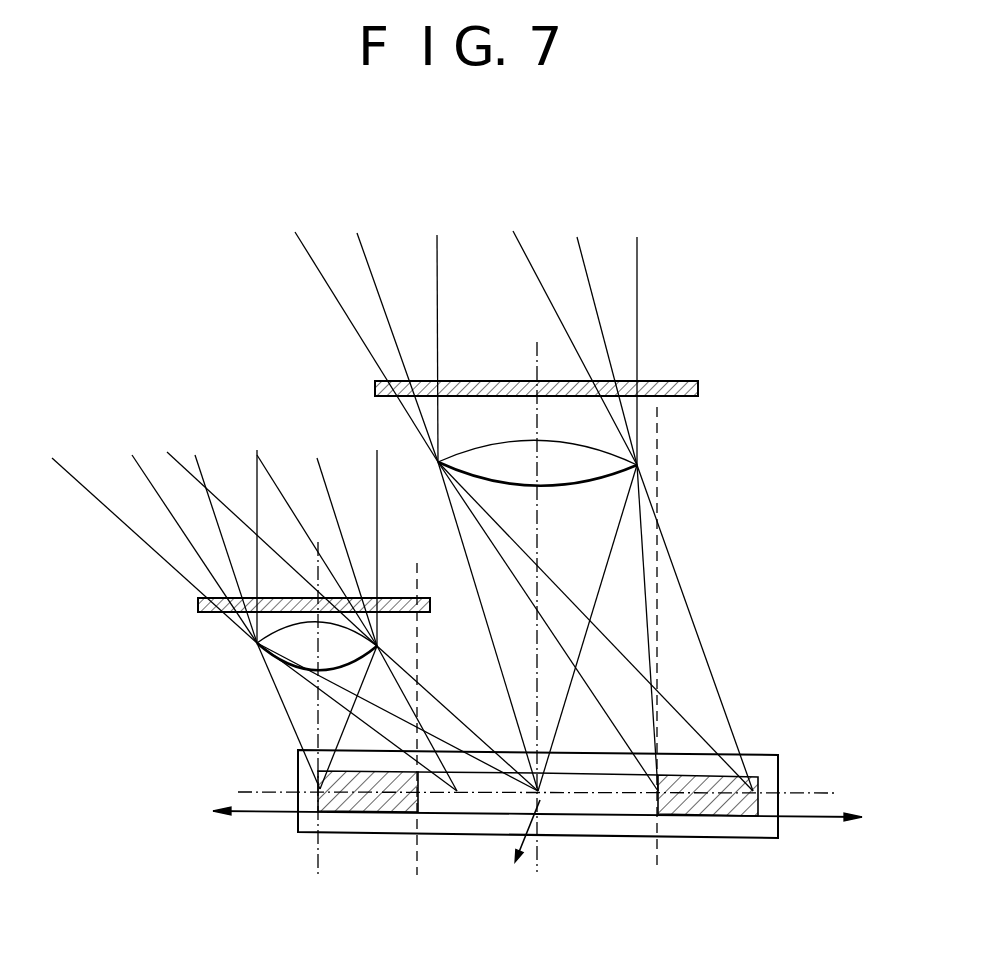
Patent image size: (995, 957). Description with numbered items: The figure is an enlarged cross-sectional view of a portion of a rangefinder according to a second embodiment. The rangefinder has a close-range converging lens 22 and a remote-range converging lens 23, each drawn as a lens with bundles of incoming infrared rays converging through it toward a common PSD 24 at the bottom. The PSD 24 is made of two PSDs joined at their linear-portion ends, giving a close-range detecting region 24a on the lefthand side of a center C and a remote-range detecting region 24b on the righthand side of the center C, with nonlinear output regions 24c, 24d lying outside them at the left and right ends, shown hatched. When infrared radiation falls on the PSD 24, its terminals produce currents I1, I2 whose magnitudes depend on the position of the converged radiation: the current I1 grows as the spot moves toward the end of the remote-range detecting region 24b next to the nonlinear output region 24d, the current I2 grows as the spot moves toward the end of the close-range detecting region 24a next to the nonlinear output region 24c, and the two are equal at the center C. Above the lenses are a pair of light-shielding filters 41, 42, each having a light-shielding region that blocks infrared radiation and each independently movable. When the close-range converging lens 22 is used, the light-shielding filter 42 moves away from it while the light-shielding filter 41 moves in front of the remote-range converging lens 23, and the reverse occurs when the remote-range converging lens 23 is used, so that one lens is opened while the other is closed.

The light-shielding filter 41 is at (684, 382).
The light-shielding filter 42 is at (398, 597).
The remote-range converging lens 23 is at (569, 470).
The close-range converging lens 22 is at (280, 645).
The PSD 24 is at (399, 845).
The close-range detecting region 24a is at (457, 802).
The remote-range detecting region 24b is at (612, 807).
The nonlinear output region 24c is at (356, 800).
The nonlinear output region 24d is at (713, 808).
The center of the PSD C is at (542, 820).
The current I1 is at (700, 838).
The current I2 is at (375, 830).